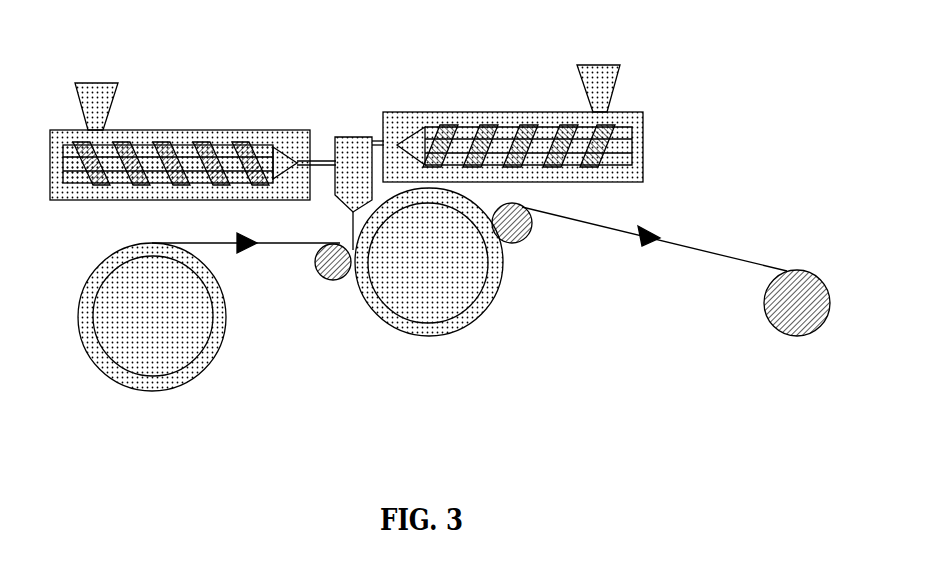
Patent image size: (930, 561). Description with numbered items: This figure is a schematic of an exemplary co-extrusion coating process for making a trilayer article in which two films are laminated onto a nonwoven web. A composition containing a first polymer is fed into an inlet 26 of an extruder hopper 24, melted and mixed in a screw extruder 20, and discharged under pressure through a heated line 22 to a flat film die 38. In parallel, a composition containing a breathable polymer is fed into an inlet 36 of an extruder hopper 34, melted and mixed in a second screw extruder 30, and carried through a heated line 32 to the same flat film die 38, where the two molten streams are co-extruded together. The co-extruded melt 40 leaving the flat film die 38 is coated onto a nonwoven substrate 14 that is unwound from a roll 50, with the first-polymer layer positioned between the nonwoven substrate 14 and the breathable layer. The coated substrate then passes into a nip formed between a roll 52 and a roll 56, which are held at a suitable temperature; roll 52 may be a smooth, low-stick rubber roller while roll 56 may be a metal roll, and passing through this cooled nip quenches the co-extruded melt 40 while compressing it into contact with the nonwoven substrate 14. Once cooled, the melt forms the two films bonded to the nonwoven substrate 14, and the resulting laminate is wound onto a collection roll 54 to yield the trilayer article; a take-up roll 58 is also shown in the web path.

The nonwoven substrate 14 is at (283, 244).
The screw extruder 20 is at (190, 130).
The heated line 22 is at (320, 160).
The extruder hopper 24 is at (112, 100).
The inlet 26 is at (94, 82).
The screw extruder 30 is at (468, 112).
The heated line 32 is at (378, 141).
The extruder hopper 34 is at (612, 88).
The inlet 36 is at (600, 65).
The flat film die 38 is at (345, 137).
The co-extruded melt 40 is at (350, 224).
The roll 50 is at (108, 372).
The roll 52 is at (328, 280).
The collection roll 54 is at (512, 223).
The roll 56 is at (415, 337).
The take-up roll 58 is at (768, 314).